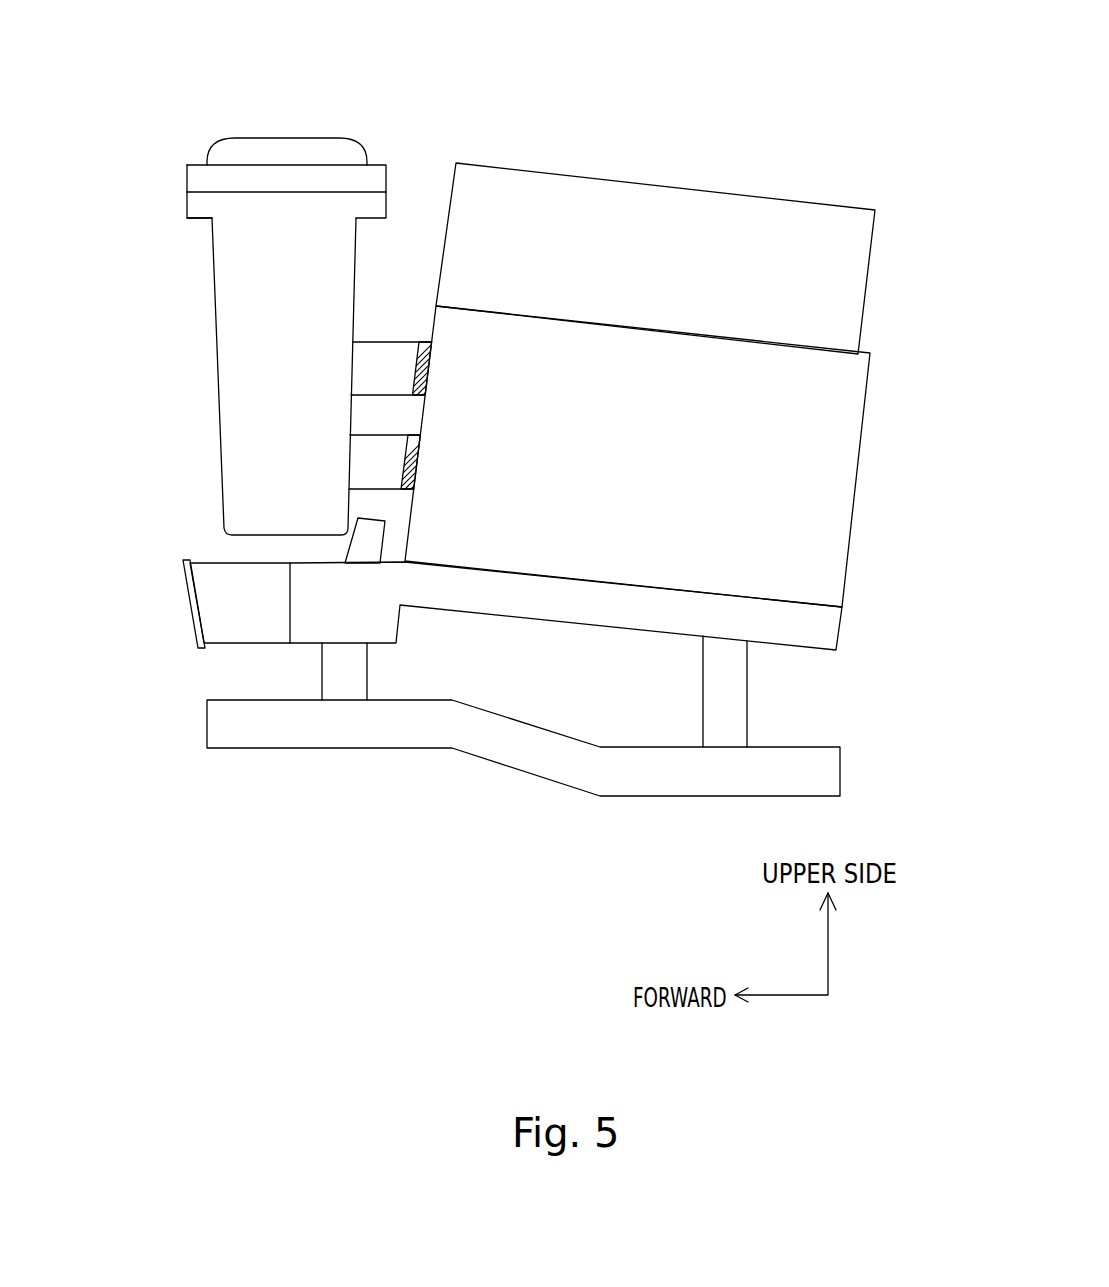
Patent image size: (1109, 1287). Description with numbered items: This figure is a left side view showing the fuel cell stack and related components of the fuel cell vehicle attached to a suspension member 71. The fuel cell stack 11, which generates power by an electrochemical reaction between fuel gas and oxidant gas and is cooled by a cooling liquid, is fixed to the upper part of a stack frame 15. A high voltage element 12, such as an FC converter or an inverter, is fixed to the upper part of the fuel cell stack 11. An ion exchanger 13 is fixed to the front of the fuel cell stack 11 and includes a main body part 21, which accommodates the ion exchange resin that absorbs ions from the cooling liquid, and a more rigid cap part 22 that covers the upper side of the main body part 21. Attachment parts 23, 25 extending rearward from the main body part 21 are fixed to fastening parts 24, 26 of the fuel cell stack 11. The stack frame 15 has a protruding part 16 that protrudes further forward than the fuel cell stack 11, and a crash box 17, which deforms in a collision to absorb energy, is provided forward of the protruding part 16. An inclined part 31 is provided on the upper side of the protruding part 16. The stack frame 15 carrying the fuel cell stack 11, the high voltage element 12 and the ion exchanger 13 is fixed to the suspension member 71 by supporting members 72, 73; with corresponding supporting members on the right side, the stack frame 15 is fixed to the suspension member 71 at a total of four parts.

The ion exchanger 13 is at (345, 100).
The cap part 22 is at (202, 168).
The main body part 21 is at (223, 283).
The attachment part 23 is at (385, 350).
The fastening part 24 is at (433, 352).
The attachment part 25 is at (365, 440).
The fastening part 26 is at (408, 432).
The inclined part 31 is at (353, 552).
The high voltage element 12 is at (860, 285).
The fuel cell stack 11 is at (858, 438).
The stack frame 15 is at (827, 632).
The protruding part 16 is at (307, 635).
The crash box 17 is at (207, 597).
The supporting member 72 is at (735, 713).
The supporting member 73 is at (332, 678).
The suspension member 71 is at (432, 738).